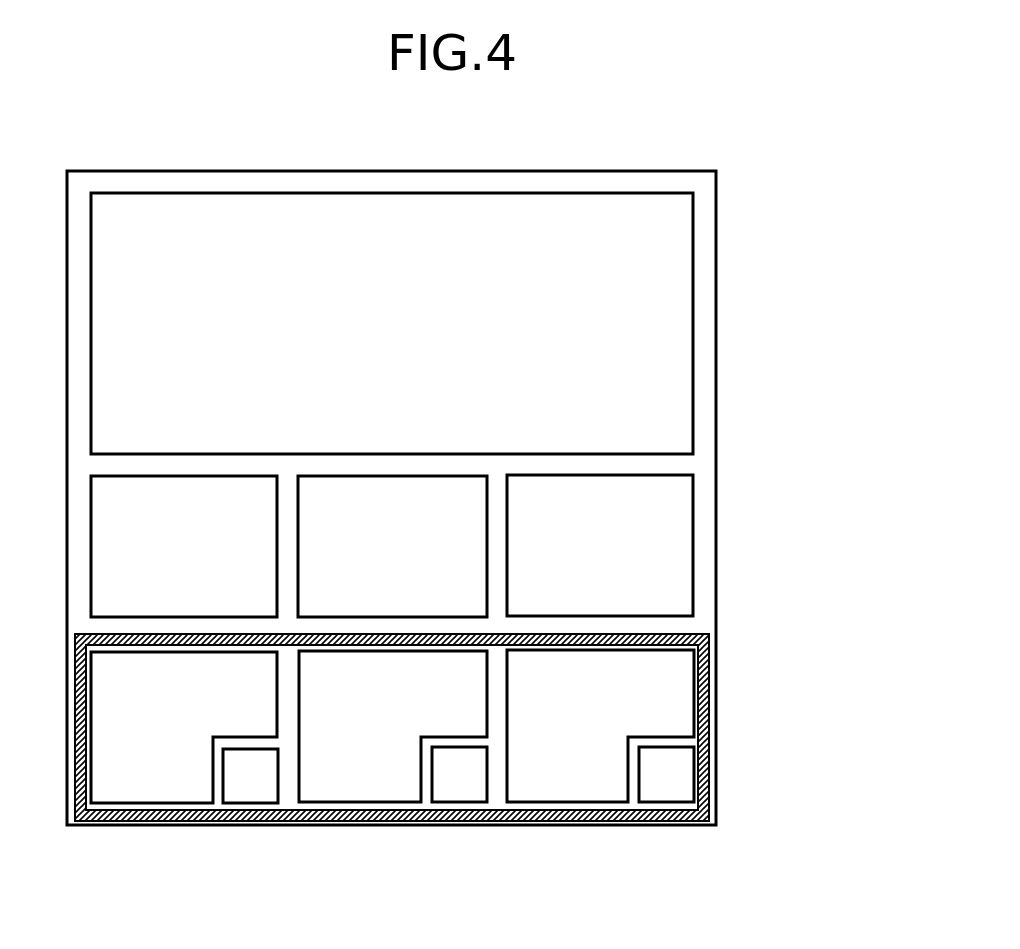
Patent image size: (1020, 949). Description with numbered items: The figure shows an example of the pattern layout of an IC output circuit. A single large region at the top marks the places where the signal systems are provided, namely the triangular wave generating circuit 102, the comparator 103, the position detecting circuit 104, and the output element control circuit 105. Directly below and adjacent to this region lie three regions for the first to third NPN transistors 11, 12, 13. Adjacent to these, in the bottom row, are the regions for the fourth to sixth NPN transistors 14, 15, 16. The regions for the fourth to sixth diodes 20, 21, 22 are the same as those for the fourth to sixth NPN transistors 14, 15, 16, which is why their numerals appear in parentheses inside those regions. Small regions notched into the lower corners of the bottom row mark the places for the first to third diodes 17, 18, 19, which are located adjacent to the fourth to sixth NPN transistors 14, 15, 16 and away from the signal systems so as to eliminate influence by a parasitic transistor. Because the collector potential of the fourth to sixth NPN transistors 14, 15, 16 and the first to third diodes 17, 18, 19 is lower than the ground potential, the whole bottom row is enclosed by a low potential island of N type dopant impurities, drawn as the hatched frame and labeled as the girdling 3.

The girdling 3 is at (709, 668).
The first NPN transistor 11 is at (184, 546).
The second NPN transistor 12 is at (392, 546).
The third NPN transistor 13 is at (600, 545).
The fourth NPN transistor 14 is at (184, 727).
The fifth NPN transistor 15 is at (393, 726).
The sixth NPN transistor 16 is at (600, 726).
The first diode 17 is at (257, 792).
The second diode 18 is at (453, 792).
The third diode 19 is at (650, 790).
The fourth diode 20 is at (184, 727).
The fifth diode 21 is at (393, 726).
The sixth diode 22 is at (600, 726).
The triangular wave generating circuit 102 is at (392, 323).
The comparator 103 is at (392, 323).
The position detecting circuit 104 is at (392, 323).
The output element control circuit 105 is at (392, 323).